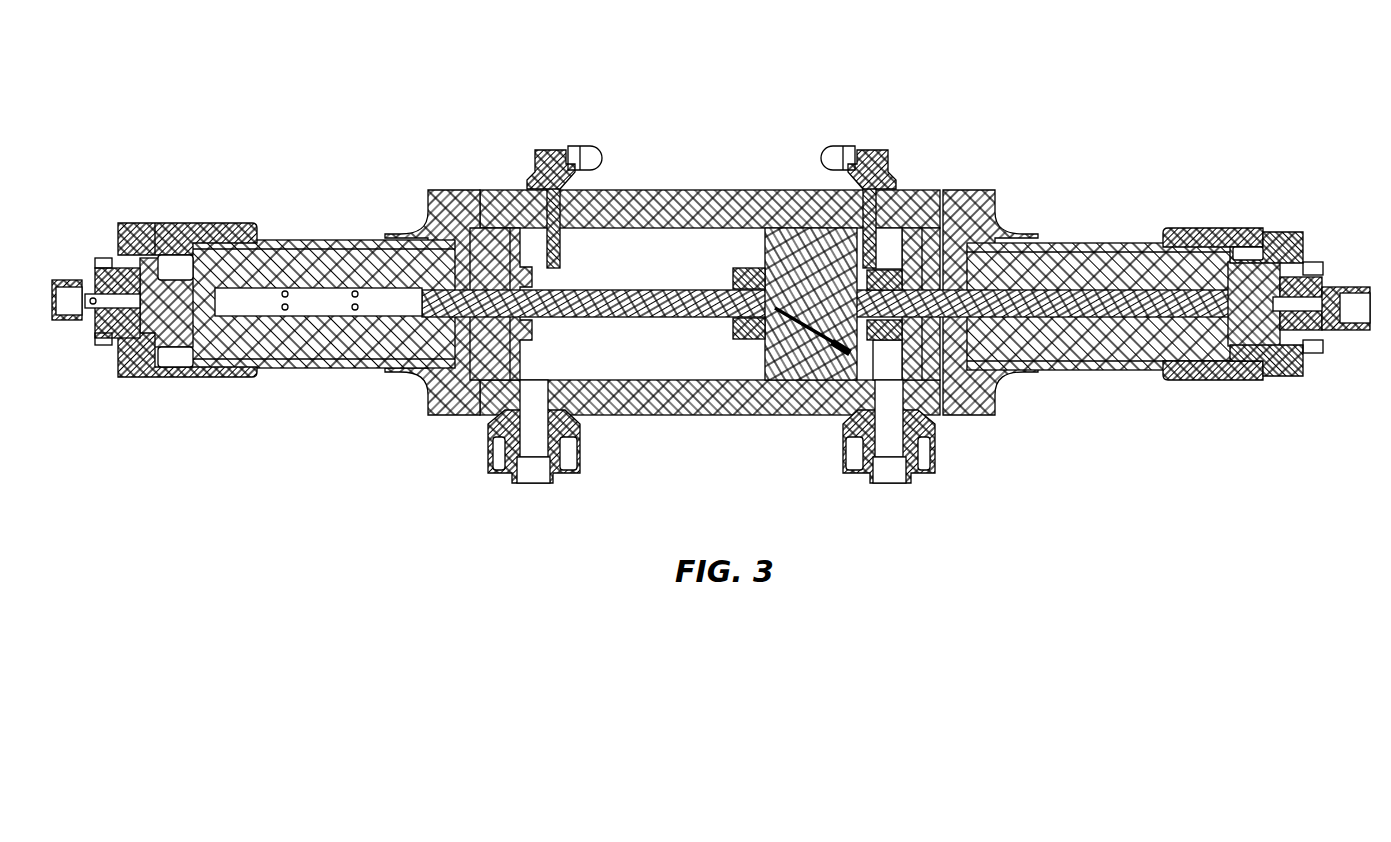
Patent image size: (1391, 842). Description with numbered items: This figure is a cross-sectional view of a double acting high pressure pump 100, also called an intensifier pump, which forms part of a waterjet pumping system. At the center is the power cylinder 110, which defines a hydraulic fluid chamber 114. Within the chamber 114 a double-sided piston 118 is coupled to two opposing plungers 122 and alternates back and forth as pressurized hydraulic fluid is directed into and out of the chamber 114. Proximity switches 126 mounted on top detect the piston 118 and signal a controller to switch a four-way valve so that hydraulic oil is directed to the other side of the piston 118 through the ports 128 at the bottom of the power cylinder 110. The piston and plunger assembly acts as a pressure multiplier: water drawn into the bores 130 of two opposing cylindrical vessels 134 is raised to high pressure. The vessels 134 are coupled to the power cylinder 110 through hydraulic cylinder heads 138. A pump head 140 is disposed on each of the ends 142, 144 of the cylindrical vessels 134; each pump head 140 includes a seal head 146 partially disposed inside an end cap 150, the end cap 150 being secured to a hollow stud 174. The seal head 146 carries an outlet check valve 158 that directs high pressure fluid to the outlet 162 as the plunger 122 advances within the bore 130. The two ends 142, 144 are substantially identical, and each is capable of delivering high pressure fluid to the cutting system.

The double acting high pressure pump 100 is at (720, 80).
The power cylinder 110 is at (748, 192).
The hydraulic fluid chamber 114 is at (655, 362).
The double-sided piston 118 is at (800, 352).
The plunger 122 is at (640, 302).
The proximity switch 126 is at (546, 150).
The port 128 is at (533, 485).
The bore 130 is at (312, 305).
The cylindrical vessel 134 is at (345, 342).
The hydraulic cylinder head 138 is at (446, 392).
The pump head 140 is at (123, 190).
The end 142 is at (143, 418).
The end 144 is at (1277, 420).
The seal head 146 is at (175, 294).
The end cap 150 is at (147, 226).
The outlet check valve 158 is at (90, 322).
The outlet 162 is at (47, 283).
The hollow stud 174 is at (282, 240).